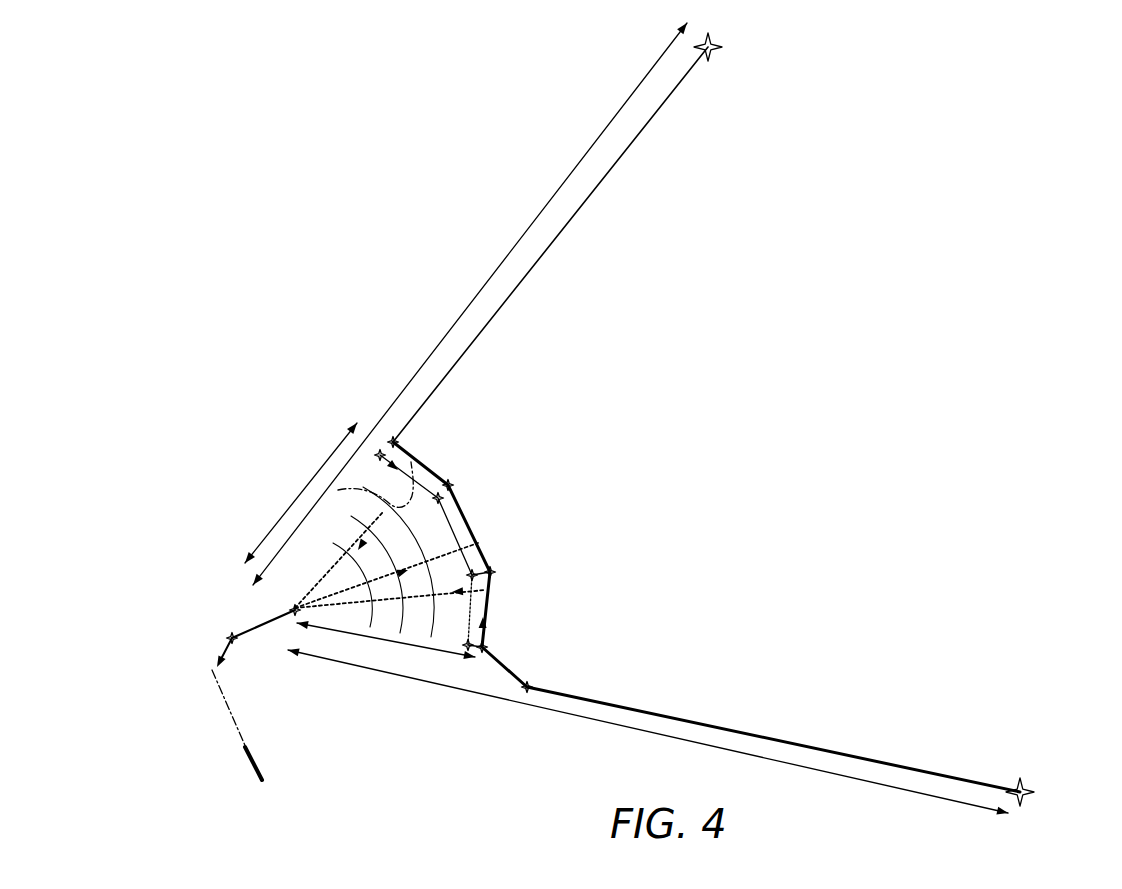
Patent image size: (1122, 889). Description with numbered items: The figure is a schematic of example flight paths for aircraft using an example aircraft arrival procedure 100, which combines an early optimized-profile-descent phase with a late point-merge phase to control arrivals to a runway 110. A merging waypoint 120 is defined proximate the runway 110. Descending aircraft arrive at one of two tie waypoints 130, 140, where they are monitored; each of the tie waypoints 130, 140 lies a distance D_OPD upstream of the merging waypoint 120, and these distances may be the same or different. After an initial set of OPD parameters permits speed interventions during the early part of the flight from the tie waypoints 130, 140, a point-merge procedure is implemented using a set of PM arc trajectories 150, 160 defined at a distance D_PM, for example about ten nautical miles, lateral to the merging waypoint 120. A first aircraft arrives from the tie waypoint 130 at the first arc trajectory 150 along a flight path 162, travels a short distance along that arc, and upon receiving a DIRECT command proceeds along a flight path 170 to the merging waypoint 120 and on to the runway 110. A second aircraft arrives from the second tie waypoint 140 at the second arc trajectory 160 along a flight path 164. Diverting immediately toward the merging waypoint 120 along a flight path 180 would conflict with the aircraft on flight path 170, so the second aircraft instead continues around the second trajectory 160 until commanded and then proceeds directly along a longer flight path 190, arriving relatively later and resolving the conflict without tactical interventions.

The aircraft arrival procedure 100 is at (912, 355).
The runway 110 is at (253, 763).
The merging waypoint 120 is at (292, 616).
The first tie waypoint 130 is at (722, 47).
The second tie waypoint 140 is at (1034, 792).
The first PM arc trajectory 150 is at (418, 472).
The second PM arc trajectory 160 is at (463, 510).
The flight path 162 is at (547, 252).
The flight path 164 is at (770, 735).
The flight path 170 is at (338, 490).
The flight path 180 is at (391, 603).
The flight path 190 is at (477, 543).